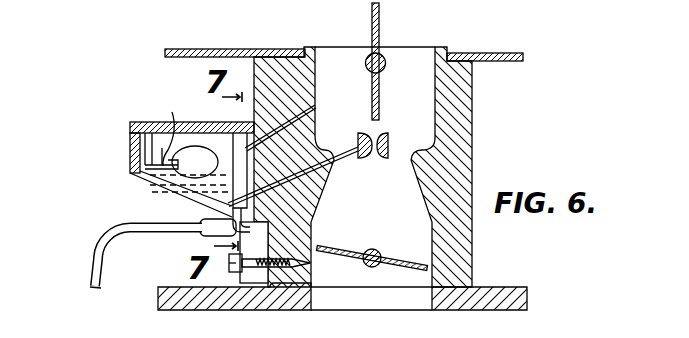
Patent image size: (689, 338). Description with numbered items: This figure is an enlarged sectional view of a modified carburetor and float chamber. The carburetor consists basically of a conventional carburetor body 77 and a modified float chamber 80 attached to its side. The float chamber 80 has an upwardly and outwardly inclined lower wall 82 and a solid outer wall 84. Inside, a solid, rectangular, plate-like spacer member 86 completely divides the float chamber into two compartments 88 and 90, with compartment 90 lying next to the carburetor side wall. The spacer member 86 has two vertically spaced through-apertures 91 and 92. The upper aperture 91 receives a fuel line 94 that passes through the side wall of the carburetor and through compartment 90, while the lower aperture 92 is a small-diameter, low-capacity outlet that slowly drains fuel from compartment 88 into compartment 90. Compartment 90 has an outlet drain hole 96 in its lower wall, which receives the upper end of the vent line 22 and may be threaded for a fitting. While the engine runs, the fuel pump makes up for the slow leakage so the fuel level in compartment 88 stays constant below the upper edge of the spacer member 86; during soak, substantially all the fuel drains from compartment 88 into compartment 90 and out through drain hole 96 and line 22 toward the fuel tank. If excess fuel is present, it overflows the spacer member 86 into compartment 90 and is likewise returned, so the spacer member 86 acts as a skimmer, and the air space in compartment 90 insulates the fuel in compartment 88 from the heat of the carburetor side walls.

The vent line 22 is at (91, 266).
The carburetor body 77 is at (475, 102).
The float chamber 80 is at (163, 154).
The lower wall 82 is at (152, 190).
The outer wall 84 is at (130, 150).
The spacer member 86 is at (195, 162).
The compartment 88 is at (144, 101).
The compartment 90 is at (240, 162).
The through-aperture 91 is at (198, 204).
The through-aperture 92 is at (196, 232).
The fuel line 94 is at (360, 146).
The outlet drain hole 96 is at (269, 252).